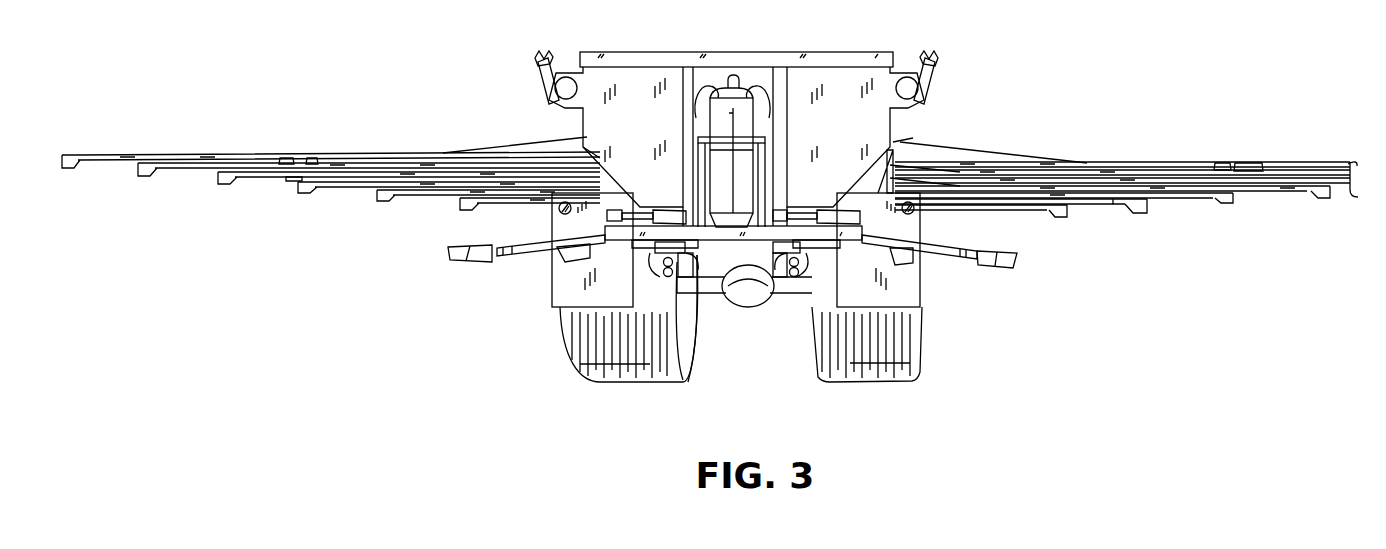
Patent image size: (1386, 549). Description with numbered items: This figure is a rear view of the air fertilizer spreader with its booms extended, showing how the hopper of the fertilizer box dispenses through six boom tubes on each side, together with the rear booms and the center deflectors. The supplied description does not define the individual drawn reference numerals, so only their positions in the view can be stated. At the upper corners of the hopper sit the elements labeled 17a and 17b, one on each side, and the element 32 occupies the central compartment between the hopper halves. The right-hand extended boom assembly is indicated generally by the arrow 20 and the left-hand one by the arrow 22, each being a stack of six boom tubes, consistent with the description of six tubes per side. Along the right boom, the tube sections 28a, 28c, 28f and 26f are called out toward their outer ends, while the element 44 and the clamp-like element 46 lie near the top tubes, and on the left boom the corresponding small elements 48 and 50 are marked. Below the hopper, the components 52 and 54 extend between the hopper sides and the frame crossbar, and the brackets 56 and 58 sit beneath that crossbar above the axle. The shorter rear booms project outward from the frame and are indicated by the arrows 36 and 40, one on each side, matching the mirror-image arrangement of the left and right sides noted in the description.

The left hitch eye 17a is at (540, 67).
The right hitch eye 17b is at (933, 67).
The right boom assembly 20 is at (1134, 146).
The left boom assembly 22 is at (331, 133).
The boom section 26f is at (1017, 208).
The boom section 28a is at (1305, 167).
The boom section 28c is at (1318, 196).
The boom section 28f is at (1137, 205).
The tank 32 is at (744, 90).
The right lower boom arm 36 is at (1000, 295).
The left lower boom arm 40 is at (474, 295).
The boom connector 44 is at (1230, 183).
The boom clamp 46 is at (1238, 168).
The boom clamp 48 is at (293, 158).
The boom connector 50 is at (292, 176).
The right hydraulic cylinder 52 is at (800, 212).
The left hydraulic cylinder 54 is at (670, 212).
The left roller bracket 56 is at (665, 256).
The right roller bracket 58 is at (798, 255).